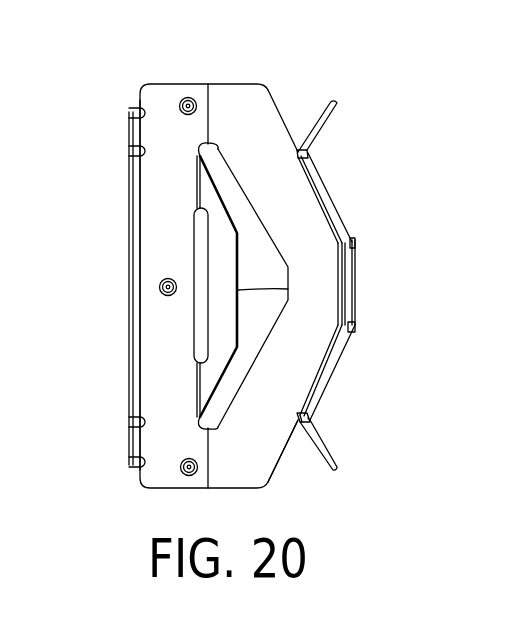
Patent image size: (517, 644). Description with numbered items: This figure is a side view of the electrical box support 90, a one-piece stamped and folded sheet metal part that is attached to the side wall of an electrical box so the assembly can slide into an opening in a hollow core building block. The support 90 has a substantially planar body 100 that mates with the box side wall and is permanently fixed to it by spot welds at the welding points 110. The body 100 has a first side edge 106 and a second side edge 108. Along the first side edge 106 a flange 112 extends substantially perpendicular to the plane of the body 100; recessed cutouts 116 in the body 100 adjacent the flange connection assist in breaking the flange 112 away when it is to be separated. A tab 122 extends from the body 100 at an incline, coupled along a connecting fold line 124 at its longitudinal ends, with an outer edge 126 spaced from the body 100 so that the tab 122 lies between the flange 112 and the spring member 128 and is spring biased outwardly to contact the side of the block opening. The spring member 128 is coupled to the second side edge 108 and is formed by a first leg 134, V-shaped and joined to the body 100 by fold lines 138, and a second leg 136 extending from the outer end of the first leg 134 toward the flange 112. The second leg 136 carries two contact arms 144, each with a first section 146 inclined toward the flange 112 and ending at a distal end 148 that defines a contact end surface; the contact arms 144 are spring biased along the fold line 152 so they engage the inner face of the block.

The electrical box support 90 is at (104, 321).
The body 100 is at (167, 98).
The first side edge 106 is at (141, 100).
The second side edge 108 is at (297, 150).
The welding points 110 is at (189, 97).
The flange 112 is at (128, 192).
The recessed cutouts 116 is at (135, 148).
The tab 122 is at (238, 231).
The connecting fold line 124 is at (200, 195).
The outer edge 126 is at (288, 289).
The spring member 128 is at (364, 234).
The first leg 134 is at (243, 469).
The second leg 136 is at (340, 306).
The fold line 138 is at (213, 103).
The contact arms 144 is at (318, 400).
The first section 146 is at (316, 185).
The distal end 148 is at (295, 148).
The fold line 152 is at (355, 245).